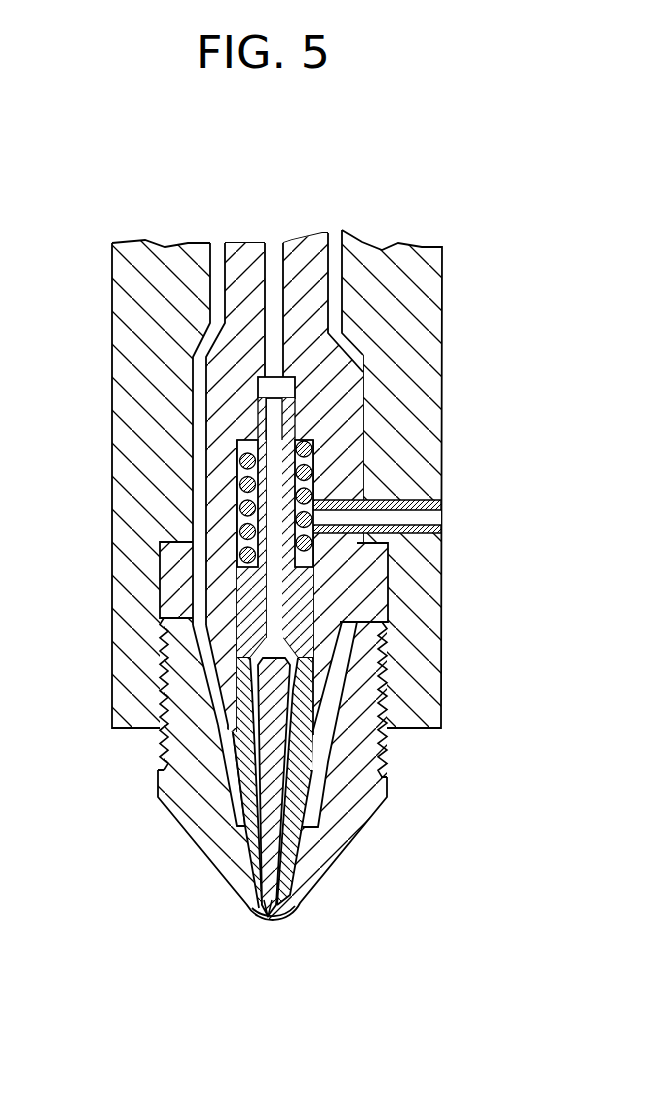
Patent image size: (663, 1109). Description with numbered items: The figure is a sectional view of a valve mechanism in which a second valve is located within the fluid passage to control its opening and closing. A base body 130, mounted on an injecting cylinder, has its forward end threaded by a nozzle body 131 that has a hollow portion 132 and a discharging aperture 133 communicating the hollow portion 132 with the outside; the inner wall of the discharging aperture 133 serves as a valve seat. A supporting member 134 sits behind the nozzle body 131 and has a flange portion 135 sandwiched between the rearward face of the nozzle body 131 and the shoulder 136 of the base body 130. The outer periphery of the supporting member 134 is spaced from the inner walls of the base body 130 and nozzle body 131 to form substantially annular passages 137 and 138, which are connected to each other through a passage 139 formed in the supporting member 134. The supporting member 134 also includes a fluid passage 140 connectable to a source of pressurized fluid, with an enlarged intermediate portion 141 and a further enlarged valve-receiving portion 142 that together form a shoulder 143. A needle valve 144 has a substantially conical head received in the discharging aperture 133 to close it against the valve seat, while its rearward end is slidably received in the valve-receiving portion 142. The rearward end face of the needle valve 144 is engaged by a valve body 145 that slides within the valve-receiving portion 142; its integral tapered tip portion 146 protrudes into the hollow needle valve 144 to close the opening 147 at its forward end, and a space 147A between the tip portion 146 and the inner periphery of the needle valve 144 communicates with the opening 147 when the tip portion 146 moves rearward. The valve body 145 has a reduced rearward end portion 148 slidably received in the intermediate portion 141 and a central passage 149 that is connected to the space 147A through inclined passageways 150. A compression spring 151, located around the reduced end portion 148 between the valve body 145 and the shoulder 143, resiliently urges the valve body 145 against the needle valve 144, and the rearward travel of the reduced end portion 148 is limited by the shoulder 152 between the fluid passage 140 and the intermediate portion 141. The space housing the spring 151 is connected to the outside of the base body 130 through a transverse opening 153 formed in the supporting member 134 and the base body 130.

The base body 130 is at (425, 350).
The nozzle body 131 is at (327, 858).
The hollow portion 132 is at (320, 772).
The discharging aperture 133 is at (285, 867).
The supporting member 134 is at (317, 677).
The flange portion 135 is at (382, 576).
The shoulder 136 is at (187, 537).
The annular passage 137 is at (200, 376).
The annular passage 138 is at (160, 738).
The passage 139 is at (193, 587).
The fluid passage 140 is at (283, 262).
The intermediate portion 141 is at (296, 388).
The valve-receiving portion 142 is at (311, 581).
The shoulder 143 is at (257, 440).
The needle valve 144 is at (247, 843).
The valve body 145 is at (207, 630).
The tapered tip portion 146 is at (273, 810).
The opening 147 is at (263, 917).
The space 147A is at (308, 762).
The reduced rearward end portion 148 is at (290, 437).
The central passage 149 is at (273, 470).
The inclined passageways 150 is at (322, 630).
The compression spring 151 is at (313, 472).
The shoulder 152 is at (288, 377).
The transverse opening 153 is at (437, 512).